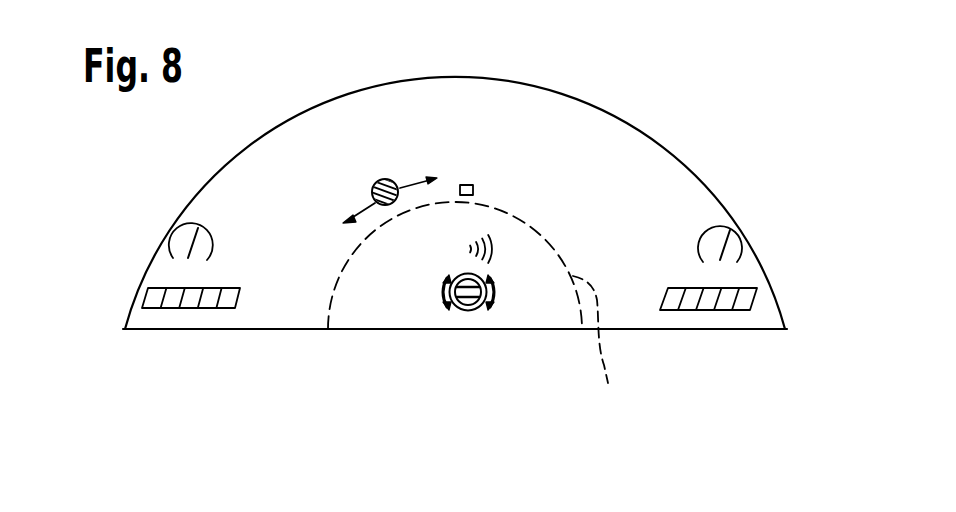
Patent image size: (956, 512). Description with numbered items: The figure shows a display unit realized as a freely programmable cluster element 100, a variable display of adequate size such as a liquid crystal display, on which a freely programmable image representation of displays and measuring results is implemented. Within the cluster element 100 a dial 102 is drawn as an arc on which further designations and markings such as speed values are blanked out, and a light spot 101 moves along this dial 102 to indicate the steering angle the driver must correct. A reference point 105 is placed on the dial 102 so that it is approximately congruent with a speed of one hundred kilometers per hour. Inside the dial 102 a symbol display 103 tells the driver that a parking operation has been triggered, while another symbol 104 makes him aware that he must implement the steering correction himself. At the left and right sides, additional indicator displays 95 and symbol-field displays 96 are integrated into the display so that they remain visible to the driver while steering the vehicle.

The indicator display 95 is at (177, 240).
The symbol-field display 96 is at (180, 308).
The freely programmable cluster element 100 is at (672, 152).
The light spot 101 is at (380, 179).
The dial 102 is at (480, 308).
The symbol display 103 is at (430, 250).
The symbol 104 is at (468, 311).
The reference point 105 is at (468, 185).